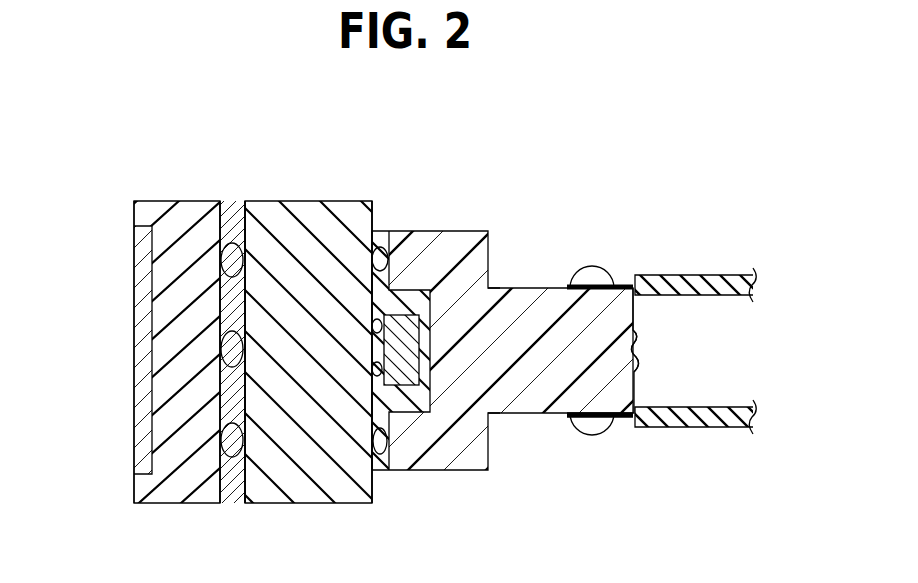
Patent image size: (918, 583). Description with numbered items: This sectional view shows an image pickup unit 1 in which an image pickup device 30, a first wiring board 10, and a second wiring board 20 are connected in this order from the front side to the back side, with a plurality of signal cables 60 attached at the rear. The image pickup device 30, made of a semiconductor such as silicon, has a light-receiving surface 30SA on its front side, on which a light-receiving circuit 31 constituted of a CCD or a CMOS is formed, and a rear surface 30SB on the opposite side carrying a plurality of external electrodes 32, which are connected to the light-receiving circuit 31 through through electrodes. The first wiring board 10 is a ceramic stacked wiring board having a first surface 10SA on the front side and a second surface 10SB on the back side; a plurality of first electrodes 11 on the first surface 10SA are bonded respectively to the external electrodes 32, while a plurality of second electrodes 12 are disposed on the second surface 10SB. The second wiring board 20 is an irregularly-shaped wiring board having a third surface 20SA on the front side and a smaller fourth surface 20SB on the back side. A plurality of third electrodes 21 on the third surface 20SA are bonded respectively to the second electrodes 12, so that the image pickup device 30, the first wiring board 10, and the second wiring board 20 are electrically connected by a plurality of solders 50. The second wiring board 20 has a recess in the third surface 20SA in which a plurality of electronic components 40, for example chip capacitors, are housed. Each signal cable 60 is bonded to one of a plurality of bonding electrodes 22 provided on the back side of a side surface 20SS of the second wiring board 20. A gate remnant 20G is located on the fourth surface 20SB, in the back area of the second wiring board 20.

The image pickup unit 1 is at (407, 343).
The first wiring board 10 is at (302, 200).
The first electrodes 11 is at (253, 250).
The second electrodes 12 is at (365, 258).
The first surface 10SA is at (232, 491).
The second surface 10SB is at (385, 488).
The second wiring board 20 is at (478, 230).
The third surface 20SA is at (364, 459).
The fourth surface 20SB is at (648, 383).
The side surface 20SS is at (512, 280).
The gate remnant 20G is at (640, 352).
The third electrodes 21 is at (395, 443).
The bonding electrodes 22 is at (592, 422).
The image pickup device 30 is at (152, 200).
The light-receiving circuit 31 is at (140, 262).
The external electrodes 32 is at (218, 258).
The light-receiving surface 30SA is at (124, 485).
The rear surface 30SB is at (232, 473).
The electronic components 40 is at (405, 312).
The solders 50 is at (232, 243).
The signal cables 60 is at (713, 274).